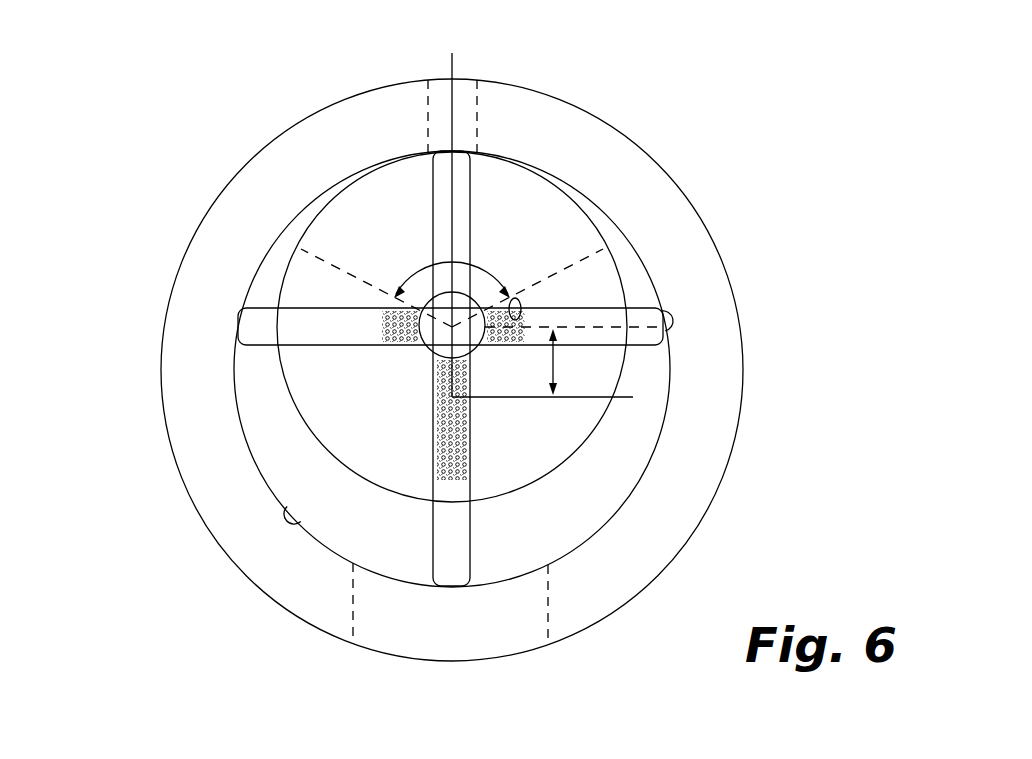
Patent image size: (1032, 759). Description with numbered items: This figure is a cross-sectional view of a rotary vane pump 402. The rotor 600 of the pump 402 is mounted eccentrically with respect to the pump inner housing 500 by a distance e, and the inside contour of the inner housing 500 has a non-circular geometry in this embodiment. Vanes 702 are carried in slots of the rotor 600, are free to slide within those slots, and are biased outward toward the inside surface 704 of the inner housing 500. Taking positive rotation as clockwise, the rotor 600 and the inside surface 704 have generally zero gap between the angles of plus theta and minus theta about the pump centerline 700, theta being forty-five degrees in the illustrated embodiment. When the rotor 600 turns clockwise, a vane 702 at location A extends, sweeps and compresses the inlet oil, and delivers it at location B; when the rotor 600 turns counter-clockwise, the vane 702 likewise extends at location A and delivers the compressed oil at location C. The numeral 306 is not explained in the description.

The rotor center axis 306 is at (438, 337).
The pump 402 is at (777, 189).
The pump inner housing 500 is at (680, 510).
The rotor 600 is at (530, 473).
The pump centerline 700 is at (455, 193).
The vane 702 is at (465, 222).
The inside surface 704 is at (295, 520).